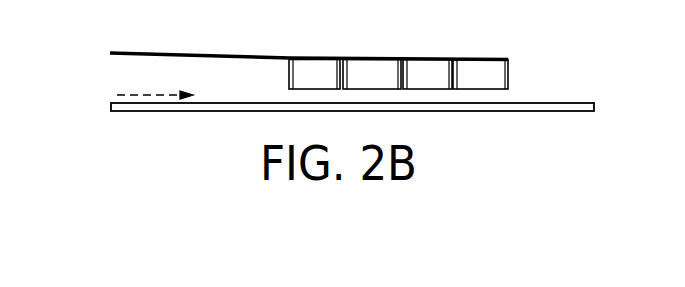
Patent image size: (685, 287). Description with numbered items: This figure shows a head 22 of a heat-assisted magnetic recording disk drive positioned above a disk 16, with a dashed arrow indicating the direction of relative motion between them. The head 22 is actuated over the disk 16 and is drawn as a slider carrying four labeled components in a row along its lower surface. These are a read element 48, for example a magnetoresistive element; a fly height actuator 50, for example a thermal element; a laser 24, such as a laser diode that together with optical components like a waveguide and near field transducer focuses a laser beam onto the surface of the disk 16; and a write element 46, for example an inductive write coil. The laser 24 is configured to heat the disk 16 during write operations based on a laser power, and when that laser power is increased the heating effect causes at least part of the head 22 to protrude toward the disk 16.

The disk 16 is at (597, 103).
The head 22 is at (342, 52).
The read element 48 is at (316, 60).
The fly height actuator 50 is at (376, 60).
The laser 24 is at (424, 60).
The write element 46 is at (513, 70).